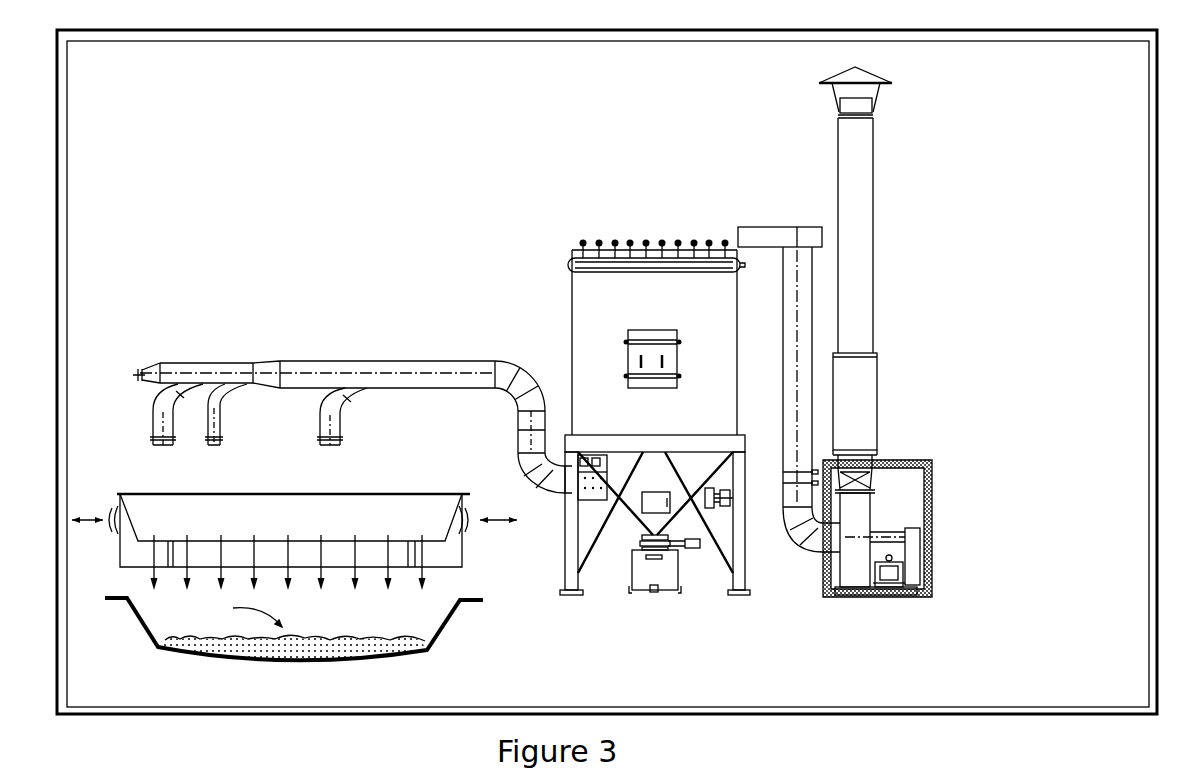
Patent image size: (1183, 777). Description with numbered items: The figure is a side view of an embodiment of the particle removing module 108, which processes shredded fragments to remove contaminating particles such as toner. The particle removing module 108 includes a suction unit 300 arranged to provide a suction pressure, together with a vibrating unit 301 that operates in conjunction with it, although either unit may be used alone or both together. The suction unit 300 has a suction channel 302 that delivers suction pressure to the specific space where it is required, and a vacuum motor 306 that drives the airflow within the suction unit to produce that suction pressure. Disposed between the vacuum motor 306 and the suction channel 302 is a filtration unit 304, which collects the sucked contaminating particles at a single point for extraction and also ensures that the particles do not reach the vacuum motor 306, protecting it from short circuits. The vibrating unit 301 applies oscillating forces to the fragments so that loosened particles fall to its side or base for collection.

The particle removing module 108 is at (185, 130).
The suction unit 300 is at (982, 78).
The vibrating unit 301 is at (472, 552).
The suction channel 302 is at (383, 353).
The filtration unit 304 is at (655, 418).
The vacuum motor 306 is at (943, 568).